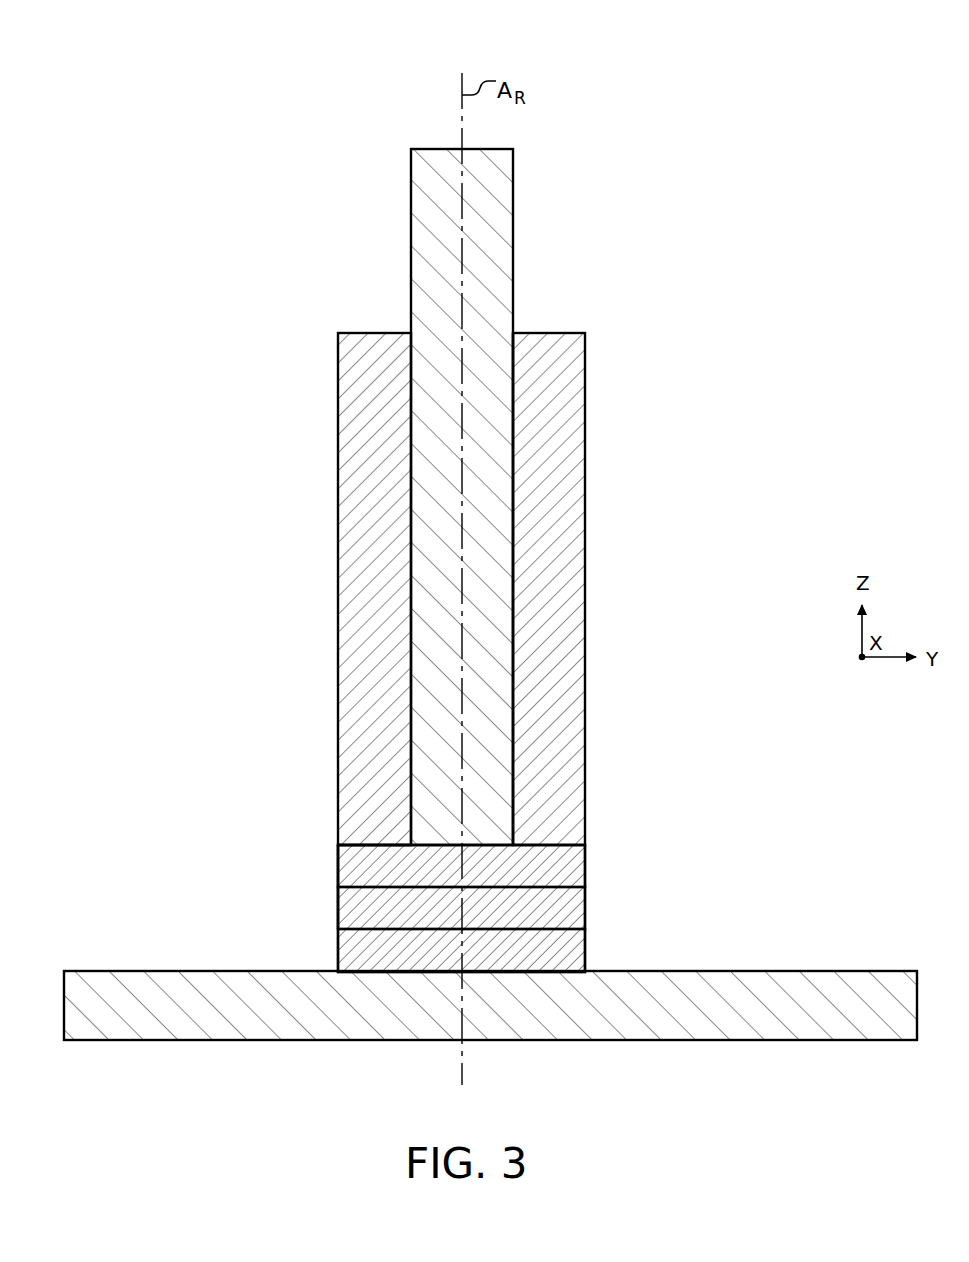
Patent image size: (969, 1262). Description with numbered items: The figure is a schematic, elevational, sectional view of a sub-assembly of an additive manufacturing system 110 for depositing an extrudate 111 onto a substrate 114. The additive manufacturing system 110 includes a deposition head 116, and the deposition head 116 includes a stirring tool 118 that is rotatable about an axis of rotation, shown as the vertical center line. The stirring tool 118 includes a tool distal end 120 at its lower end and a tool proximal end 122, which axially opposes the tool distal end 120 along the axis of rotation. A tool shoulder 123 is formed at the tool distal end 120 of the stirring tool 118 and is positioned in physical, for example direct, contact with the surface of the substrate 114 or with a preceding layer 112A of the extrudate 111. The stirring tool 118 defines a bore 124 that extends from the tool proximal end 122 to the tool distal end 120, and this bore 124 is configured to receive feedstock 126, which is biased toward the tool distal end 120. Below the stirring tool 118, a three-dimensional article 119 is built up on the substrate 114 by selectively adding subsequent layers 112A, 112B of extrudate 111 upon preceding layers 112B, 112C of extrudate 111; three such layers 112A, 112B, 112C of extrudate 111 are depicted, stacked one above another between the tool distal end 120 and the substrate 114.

The additive manufacturing system 110 is at (494, 526).
The extrudate 111 is at (561, 881).
The layer of extrudate 112A is at (585, 863).
The layer of extrudate 112B is at (585, 905).
The layer of extrudate 112C is at (585, 947).
The substrate 114 is at (776, 971).
The deposition head 116 is at (541, 450).
The stirring tool 118 is at (576, 333).
The three-dimensional article 119 is at (447, 881).
The tool distal end 120 is at (363, 845).
The tool proximal end 122 is at (365, 333).
The tool shoulder 123 is at (352, 847).
The bore 124 is at (512, 342).
The feedstock 126 is at (505, 252).